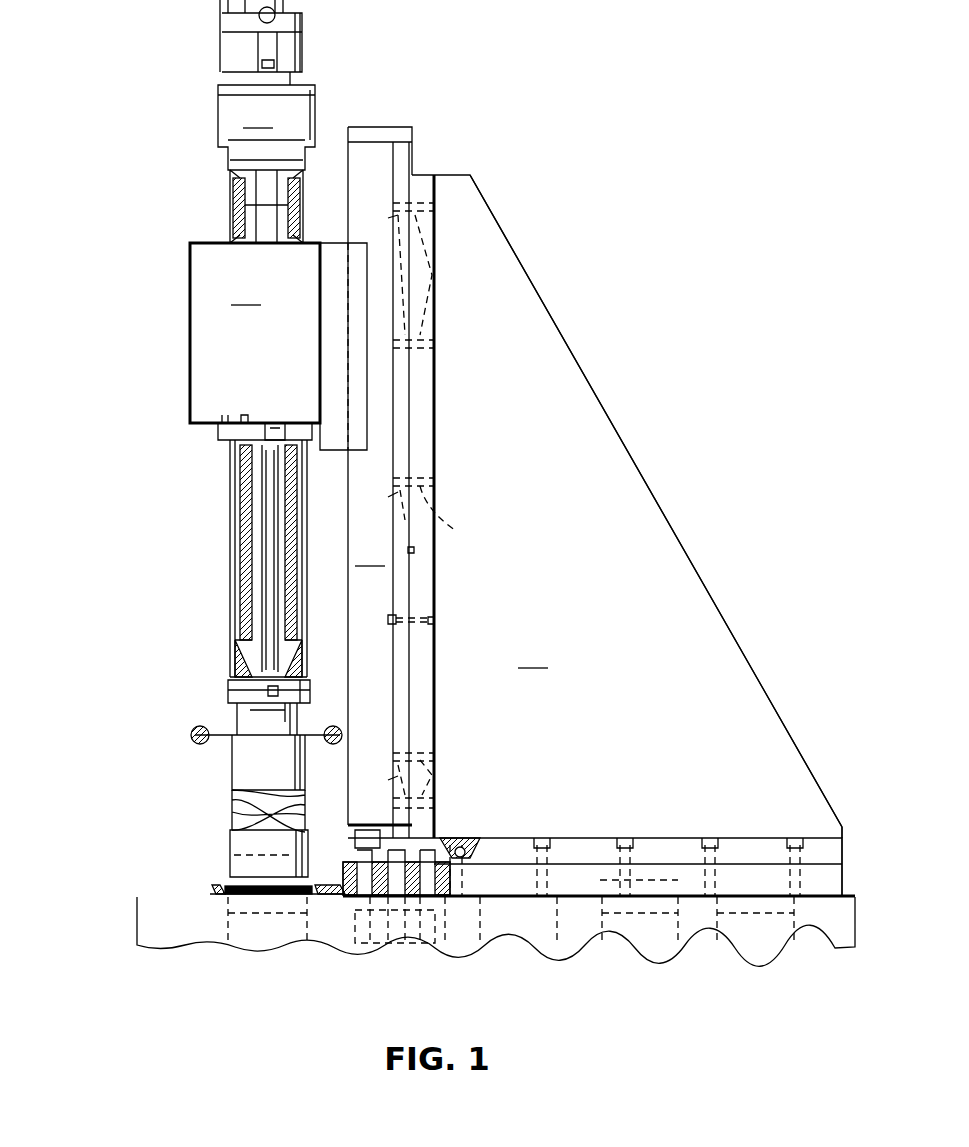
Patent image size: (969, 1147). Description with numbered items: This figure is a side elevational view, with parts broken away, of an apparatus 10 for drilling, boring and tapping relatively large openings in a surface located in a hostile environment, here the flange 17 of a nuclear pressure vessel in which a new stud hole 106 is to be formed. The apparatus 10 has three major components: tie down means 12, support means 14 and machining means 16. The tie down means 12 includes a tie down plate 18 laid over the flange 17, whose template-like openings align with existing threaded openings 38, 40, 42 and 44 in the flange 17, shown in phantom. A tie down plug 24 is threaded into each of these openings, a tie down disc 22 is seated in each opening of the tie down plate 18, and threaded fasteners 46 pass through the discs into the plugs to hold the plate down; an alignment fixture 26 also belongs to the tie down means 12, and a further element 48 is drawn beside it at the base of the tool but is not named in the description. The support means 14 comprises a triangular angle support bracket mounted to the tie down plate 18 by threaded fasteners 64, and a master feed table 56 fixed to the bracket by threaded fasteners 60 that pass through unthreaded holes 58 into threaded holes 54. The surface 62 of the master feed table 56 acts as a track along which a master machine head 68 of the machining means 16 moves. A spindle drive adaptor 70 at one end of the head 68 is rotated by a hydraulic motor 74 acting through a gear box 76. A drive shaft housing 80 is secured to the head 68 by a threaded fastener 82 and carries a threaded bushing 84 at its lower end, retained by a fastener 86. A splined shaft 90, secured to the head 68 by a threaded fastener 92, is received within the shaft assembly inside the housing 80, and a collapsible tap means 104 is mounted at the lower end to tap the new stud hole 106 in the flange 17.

The apparatus 10 is at (720, 606).
The tie down means 12 is at (846, 862).
The support means 14 is at (627, 506).
The machining means 16 is at (278, 346).
The flange 17 is at (137, 903).
The tie down plate 18 is at (728, 893).
The tie down disc 22 is at (348, 862).
The tie down plug 24 is at (436, 930).
The alignment fixture 26 is at (210, 892).
The threaded opening 38 is at (796, 928).
The threaded opening 40 is at (680, 925).
The threaded opening 42 is at (557, 928).
The threaded opening 44 is at (445, 905).
The threaded fastener 46 is at (356, 905).
The seal plate 48 is at (216, 885).
The threaded hole 54 is at (436, 275).
The master feed table 56 is at (391, 487).
The unthreaded hole 58 is at (388, 218).
The threaded fastener 60 is at (390, 624).
The surface 62 is at (348, 612).
The threaded fastener 64 is at (462, 838).
The master machine head 68 is at (190, 297).
The spindle drive adaptor 70 is at (232, 200).
The hydraulic motor 74 is at (220, 52).
The gear box 76 is at (266, 127).
The drive shaft housing 80 is at (230, 498).
The threaded fastener 82 is at (224, 415).
The threaded bushing 84 is at (232, 673).
The fastener 86 is at (246, 550).
The splined shaft 90 is at (276, 425).
The threaded fastener 92 is at (244, 415).
The collapsible tap means 104 is at (228, 838).
The new stud hole 106 is at (228, 922).